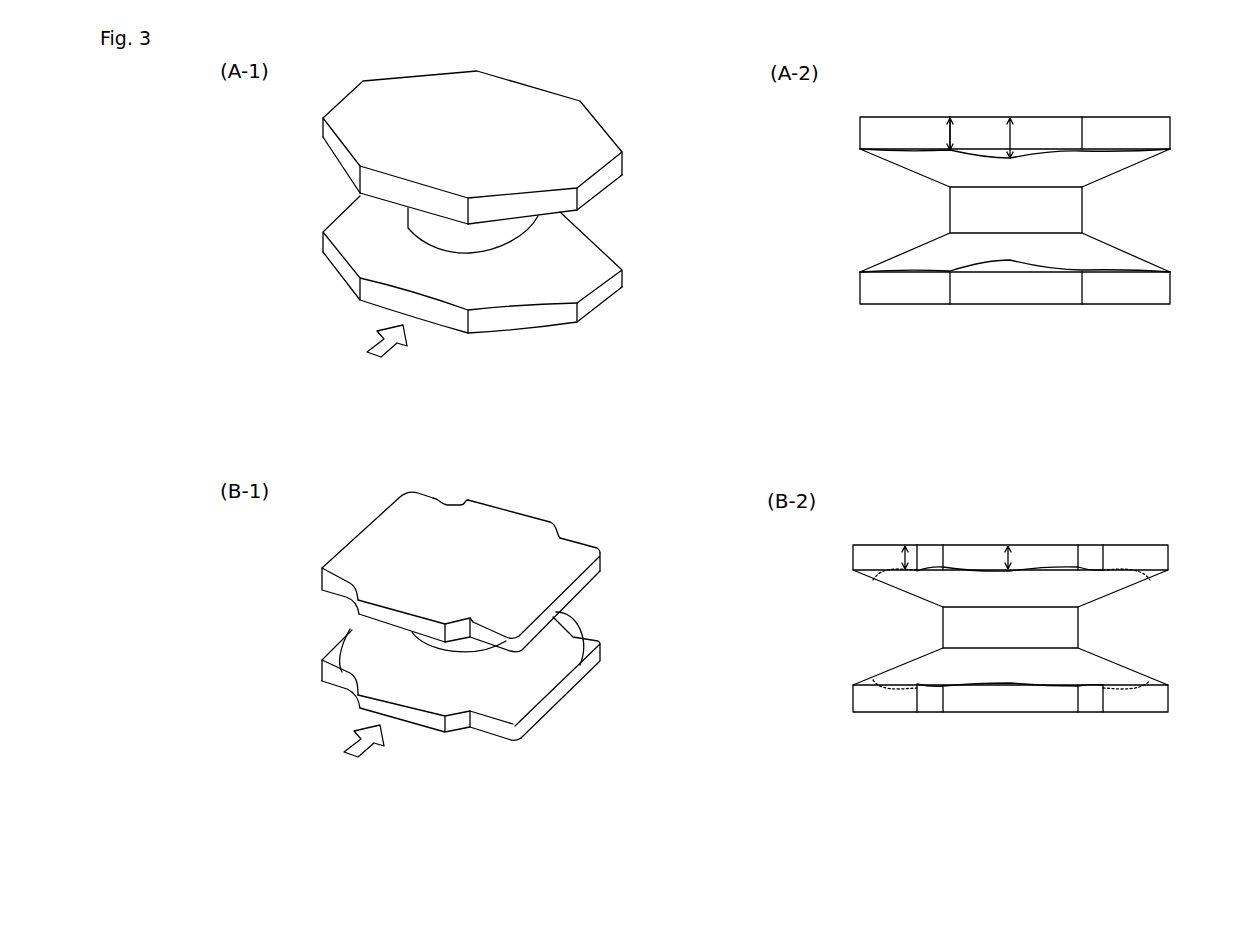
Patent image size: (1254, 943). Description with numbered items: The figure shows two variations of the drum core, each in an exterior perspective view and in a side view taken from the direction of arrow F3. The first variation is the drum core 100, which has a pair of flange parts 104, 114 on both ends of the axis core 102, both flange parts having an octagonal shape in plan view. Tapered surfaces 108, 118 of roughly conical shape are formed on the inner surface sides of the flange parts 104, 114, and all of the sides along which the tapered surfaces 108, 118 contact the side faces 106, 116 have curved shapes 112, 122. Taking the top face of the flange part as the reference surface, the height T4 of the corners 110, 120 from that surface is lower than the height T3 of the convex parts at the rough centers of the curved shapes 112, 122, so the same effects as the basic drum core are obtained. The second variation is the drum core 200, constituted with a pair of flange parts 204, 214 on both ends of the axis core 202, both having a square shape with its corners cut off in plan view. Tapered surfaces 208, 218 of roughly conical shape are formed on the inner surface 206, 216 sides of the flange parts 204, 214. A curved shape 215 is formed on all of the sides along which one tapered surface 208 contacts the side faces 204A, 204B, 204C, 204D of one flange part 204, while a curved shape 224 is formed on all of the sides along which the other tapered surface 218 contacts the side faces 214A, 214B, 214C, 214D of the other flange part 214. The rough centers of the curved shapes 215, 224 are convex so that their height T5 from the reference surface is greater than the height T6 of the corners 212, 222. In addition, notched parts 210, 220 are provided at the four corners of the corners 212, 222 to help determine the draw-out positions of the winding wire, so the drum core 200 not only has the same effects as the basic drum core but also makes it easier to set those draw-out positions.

The drum core 100 is at (616, 97).
The axis core 102 is at (507, 238).
The flange part 104 is at (536, 65).
The side face 106 is at (335, 141).
The tapered surface 108 is at (1128, 165).
The corner 110 is at (352, 178).
The curved shape 112 is at (385, 206).
The flange part 114 is at (596, 335).
The side face 116 is at (443, 318).
The tapered surface 118 is at (578, 262).
The corner 120 is at (358, 290).
The curved shape 122 is at (412, 280).
The height of convex part T3 is at (1023, 138).
The height of corner T4 is at (937, 134).
The arrow F3 is at (367, 553).
The drum core 200 is at (615, 508).
The axis core 202 is at (487, 647).
The flange part 204 is at (508, 483).
The side face 204A is at (402, 618).
The side face 204B is at (538, 510).
The side face 204C is at (602, 580).
The side face 204D is at (380, 508).
The inner surface 206 is at (1153, 575).
The tapered surface 208 is at (1108, 593).
The notched part 210 is at (427, 493).
The corner 212 is at (323, 568).
The flange part 214 is at (554, 734).
The side face 214A is at (420, 720).
The side face 214B is at (562, 617).
The side face 214C is at (557, 698).
The side face 214D is at (347, 623).
The curved shape 215 is at (395, 630).
The inner surface 216 is at (603, 638).
The tapered surface 218 is at (607, 665).
The notched part 220 is at (330, 682).
The corner 222 is at (322, 673).
The curved shape 224 is at (400, 684).
The height of convex part T5 is at (1023, 558).
The height of corner T6 is at (900, 560).